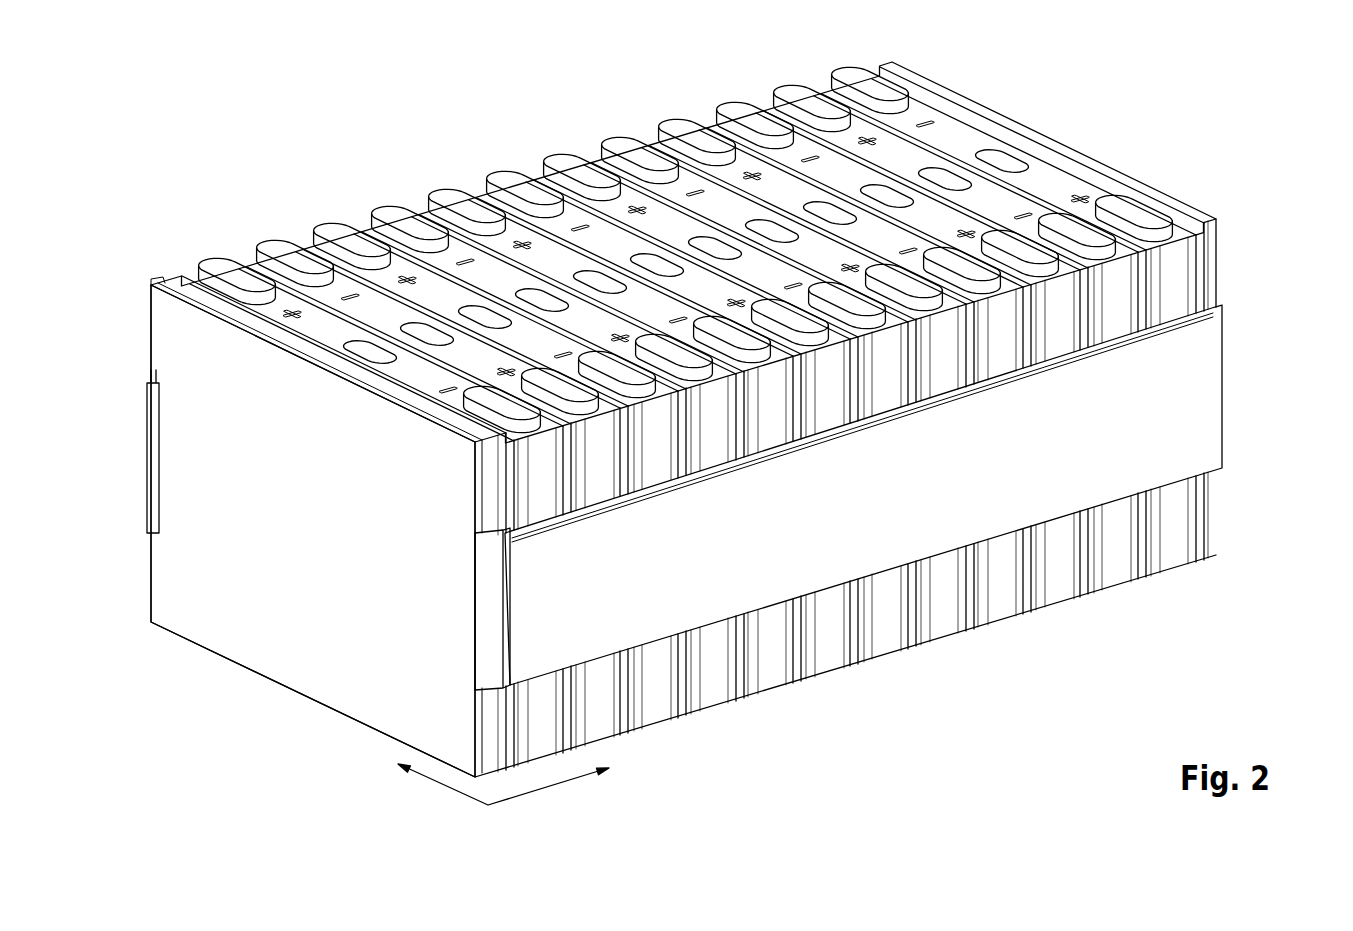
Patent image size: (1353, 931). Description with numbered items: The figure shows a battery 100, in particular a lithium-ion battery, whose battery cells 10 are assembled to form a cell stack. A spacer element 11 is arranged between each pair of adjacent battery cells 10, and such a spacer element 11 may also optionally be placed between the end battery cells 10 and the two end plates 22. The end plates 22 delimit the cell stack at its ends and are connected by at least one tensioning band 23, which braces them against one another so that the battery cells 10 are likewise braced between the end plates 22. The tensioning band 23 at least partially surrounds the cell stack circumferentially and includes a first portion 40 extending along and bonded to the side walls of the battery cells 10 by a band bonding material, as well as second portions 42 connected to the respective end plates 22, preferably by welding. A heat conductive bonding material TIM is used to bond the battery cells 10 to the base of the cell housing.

The battery 100 is at (391, 147).
The battery cells 10 is at (713, 700).
The spacer element 11 is at (800, 676).
The end plates 22 is at (170, 347).
The tensioning band 23 is at (149, 443).
The first portion 40 is at (1200, 406).
The second portions 42 is at (500, 574).
The heat conductive bonding material TIM is at (1183, 312).